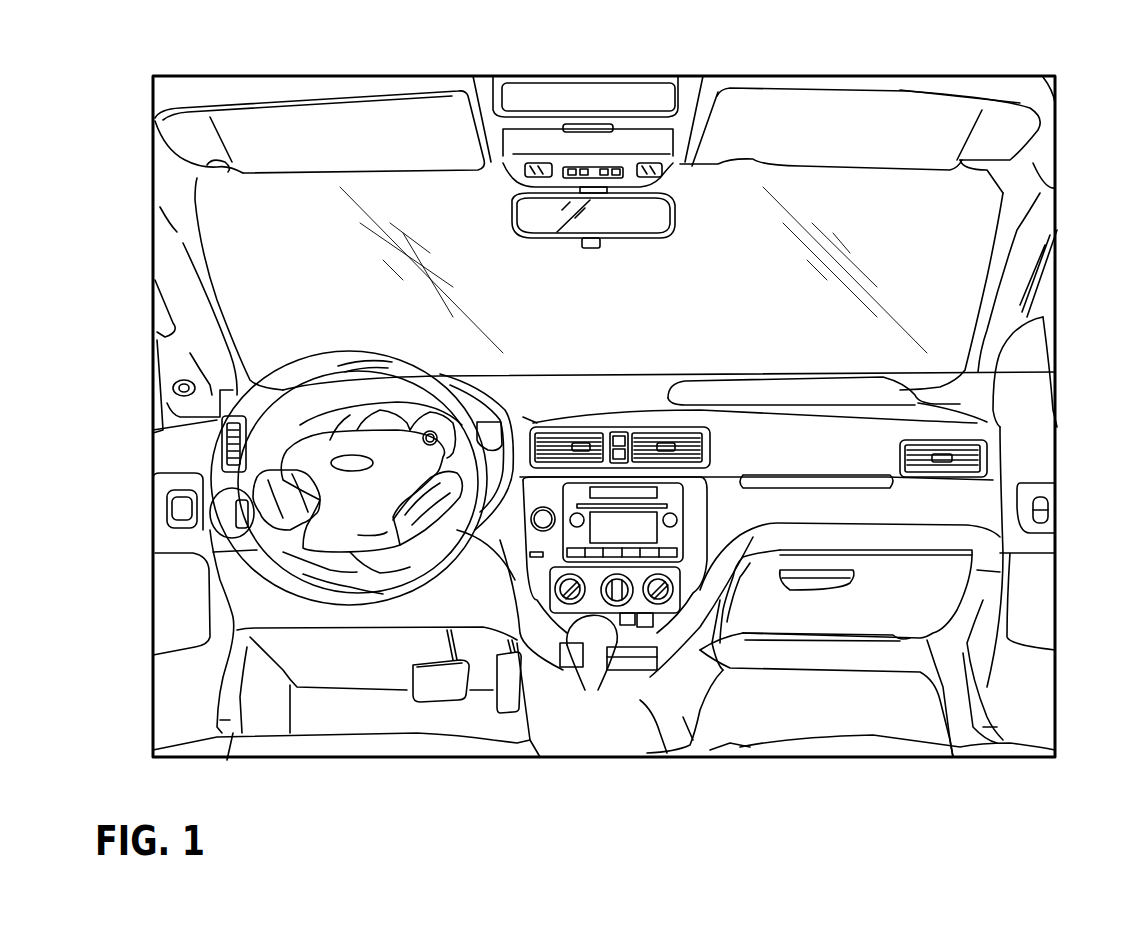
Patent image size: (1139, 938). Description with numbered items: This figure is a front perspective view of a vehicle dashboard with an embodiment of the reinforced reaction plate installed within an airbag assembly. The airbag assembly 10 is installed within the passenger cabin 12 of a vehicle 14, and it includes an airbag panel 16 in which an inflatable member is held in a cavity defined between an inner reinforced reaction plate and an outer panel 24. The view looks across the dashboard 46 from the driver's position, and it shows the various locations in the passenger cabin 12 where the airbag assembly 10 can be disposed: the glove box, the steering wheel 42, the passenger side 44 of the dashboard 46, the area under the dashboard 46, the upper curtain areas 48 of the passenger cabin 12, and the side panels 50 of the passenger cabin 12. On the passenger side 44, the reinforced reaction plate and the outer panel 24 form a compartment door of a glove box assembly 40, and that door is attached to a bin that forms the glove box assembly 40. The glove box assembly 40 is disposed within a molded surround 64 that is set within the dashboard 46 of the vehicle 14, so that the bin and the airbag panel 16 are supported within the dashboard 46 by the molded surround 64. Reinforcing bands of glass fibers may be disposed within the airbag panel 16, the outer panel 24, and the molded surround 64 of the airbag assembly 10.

The airbag assembly 10 is at (900, 562).
The passenger cabin 12 is at (920, 228).
The vehicle 14 is at (247, 63).
The airbag panel 16 is at (923, 586).
The outer panel 24 is at (778, 605).
The glove box assembly 40 is at (945, 617).
The steering wheel 42 is at (345, 496).
The passenger side 44 is at (820, 400).
The dashboard 46 is at (587, 403).
The upper curtain areas 48 is at (1035, 163).
The side panels 50 is at (1015, 693).
The molded surround 64 is at (978, 572).